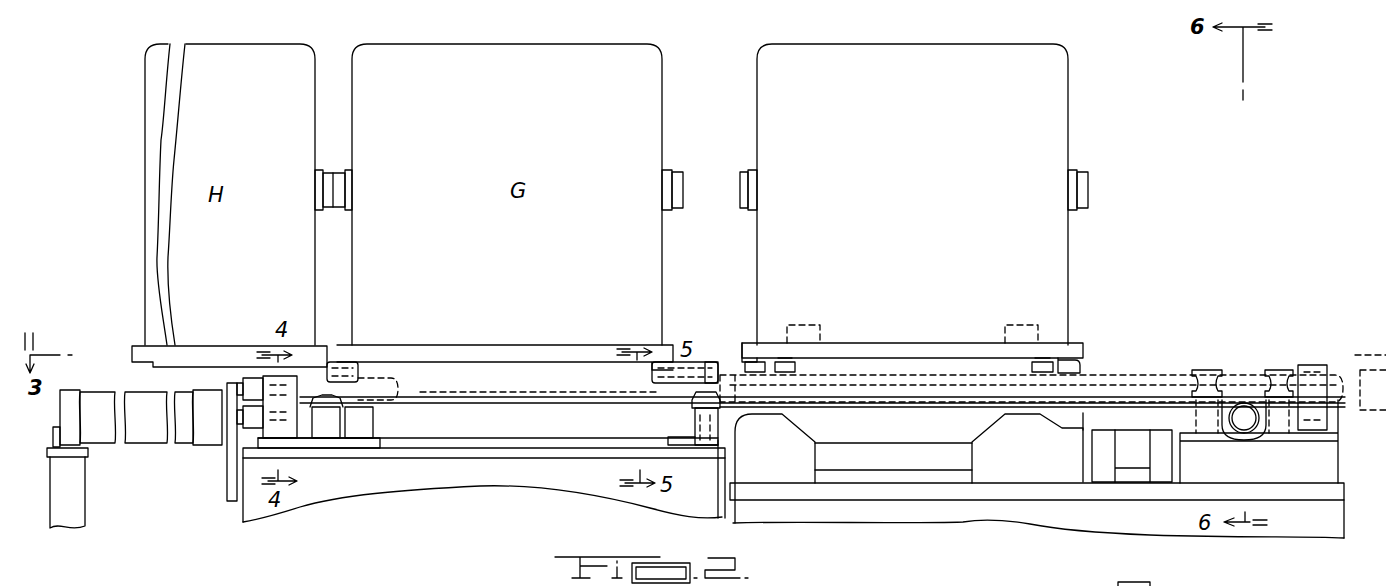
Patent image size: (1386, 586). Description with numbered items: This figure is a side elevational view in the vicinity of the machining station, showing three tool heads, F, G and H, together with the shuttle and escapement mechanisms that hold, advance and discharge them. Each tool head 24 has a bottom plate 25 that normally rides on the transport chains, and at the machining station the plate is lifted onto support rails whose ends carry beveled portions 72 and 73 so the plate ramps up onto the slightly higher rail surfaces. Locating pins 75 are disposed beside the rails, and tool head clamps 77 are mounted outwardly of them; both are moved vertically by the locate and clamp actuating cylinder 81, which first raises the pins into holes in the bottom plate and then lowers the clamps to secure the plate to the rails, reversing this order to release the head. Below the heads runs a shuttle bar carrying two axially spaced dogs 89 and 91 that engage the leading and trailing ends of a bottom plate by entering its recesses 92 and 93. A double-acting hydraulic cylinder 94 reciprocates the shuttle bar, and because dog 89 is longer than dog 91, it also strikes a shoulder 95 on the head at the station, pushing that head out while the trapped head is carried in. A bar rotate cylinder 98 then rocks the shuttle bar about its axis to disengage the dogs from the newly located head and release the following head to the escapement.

The tool head 24 is at (1081, 276).
The bottom plate 25 is at (920, 338).
The beveled portion 72 is at (747, 362).
The beveled portion 73 is at (1082, 365).
The locating pin 75 is at (798, 370).
The tool head clamp 77 is at (828, 310).
The locate and clamp actuating cylinder 81 is at (1123, 437).
The dog 89 is at (705, 360).
The dog 91 is at (355, 362).
The recess 92 is at (652, 375).
The recess 93 is at (333, 362).
The double-acting hydraulic cylinder 94 is at (143, 435).
The shoulder 95 is at (760, 362).
The bar rotate cylinder 98 is at (1175, 585).